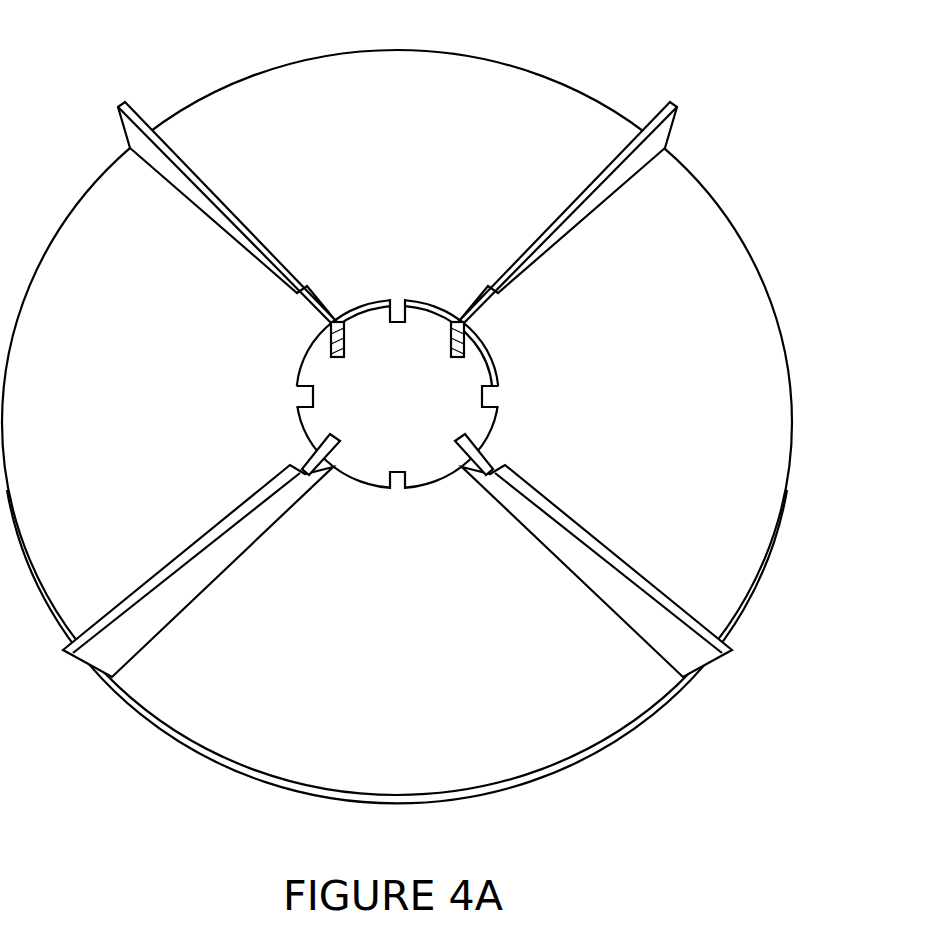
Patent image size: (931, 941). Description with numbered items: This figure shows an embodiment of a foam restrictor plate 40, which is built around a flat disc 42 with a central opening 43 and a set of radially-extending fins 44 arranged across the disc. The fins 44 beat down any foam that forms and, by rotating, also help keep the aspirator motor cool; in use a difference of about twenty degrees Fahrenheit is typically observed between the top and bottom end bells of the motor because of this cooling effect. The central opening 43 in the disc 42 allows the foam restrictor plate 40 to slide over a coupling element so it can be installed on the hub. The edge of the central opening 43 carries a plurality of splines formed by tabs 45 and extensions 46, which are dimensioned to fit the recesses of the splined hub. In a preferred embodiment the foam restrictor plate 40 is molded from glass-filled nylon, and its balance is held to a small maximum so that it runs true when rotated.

The foam restrictor plate 40 is at (196, 806).
The disc 42 is at (562, 763).
The central opening 43 is at (380, 405).
The radially-extending fins 44 is at (650, 592).
The tabs 45 is at (497, 380).
The extensions 46 is at (351, 310).